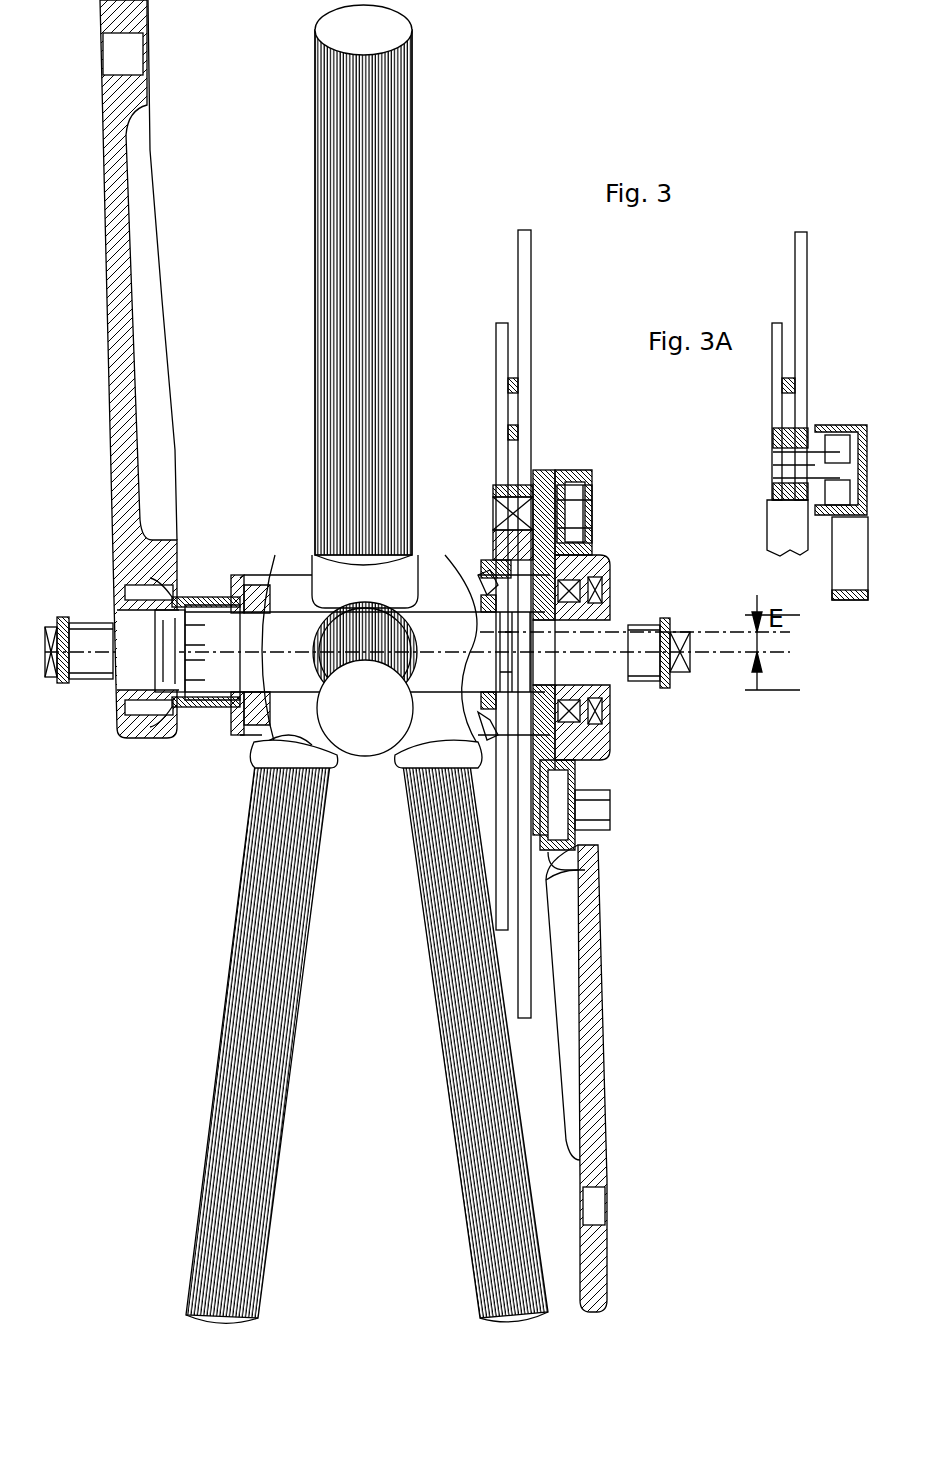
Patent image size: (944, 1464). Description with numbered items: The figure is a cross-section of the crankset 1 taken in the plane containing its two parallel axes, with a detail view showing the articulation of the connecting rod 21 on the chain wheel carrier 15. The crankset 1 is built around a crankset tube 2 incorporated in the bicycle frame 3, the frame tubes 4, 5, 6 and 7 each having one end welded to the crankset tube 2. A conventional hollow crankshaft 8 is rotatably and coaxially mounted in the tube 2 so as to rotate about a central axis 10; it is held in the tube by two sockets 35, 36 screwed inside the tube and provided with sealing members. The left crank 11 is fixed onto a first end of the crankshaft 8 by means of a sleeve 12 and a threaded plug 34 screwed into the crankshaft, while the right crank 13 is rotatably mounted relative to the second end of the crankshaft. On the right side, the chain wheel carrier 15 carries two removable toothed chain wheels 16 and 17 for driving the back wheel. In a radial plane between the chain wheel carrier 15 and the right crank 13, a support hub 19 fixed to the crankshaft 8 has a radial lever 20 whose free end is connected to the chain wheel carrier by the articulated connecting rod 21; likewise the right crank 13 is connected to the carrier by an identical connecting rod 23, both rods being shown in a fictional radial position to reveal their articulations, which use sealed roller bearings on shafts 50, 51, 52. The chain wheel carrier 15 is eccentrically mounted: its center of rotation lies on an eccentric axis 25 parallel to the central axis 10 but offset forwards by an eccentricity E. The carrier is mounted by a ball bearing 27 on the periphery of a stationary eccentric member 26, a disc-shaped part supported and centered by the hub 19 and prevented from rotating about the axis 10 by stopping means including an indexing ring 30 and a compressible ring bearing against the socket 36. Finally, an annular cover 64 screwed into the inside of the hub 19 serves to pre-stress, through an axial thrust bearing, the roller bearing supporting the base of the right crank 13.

In FIG. 3, the crankset 1 is at (155, 788).
In FIG. 3, the crankset tube 2 is at (290, 598).
In FIG. 3, the bicycle frame 3 is at (392, 285).
In FIG. 3, the tube 4 is at (330, 258).
In FIG. 3, the tube 5 is at (370, 745).
In FIG. 3, the tube 6 is at (240, 1062).
In FIG. 3, the tube 7 is at (455, 1062).
In FIG. 3, the hollow crankshaft 8 is at (488, 642).
In FIG. 3, the central axis 10 is at (788, 656).
In FIG. 3, the left crank 11 is at (125, 385).
In FIG. 3, the sleeve 12 is at (205, 600).
In FIG. 3, the right crank 13 is at (605, 1040).
In FIG. 3A, the chain wheel carrier 15 is at (780, 445).
In FIG. 3, the toothed chain wheel 16 is at (502, 346).
In FIG. 3, the toothed chain wheel 17 is at (526, 310).
In FIG. 3, the support hub 19 is at (607, 600).
In FIG. 3, the radial lever 20 is at (560, 548).
In FIG. 3, the connecting rod 21 is at (570, 468).
In FIG. 3A, the connecting rod 21 is at (852, 432).
In FIG. 3, the connecting rod 23 is at (585, 870).
In FIG. 3, the eccentric axis 25 is at (788, 634).
In FIG. 3, the eccentric member 26 is at (495, 522).
In FIG. 3, the ball bearing 27 is at (505, 500).
In FIG. 3, the indexing ring 30 is at (485, 568).
In FIG. 3, the threaded plug 34 is at (88, 690).
In FIG. 3, the socket 35 is at (236, 735).
In FIG. 3, the socket 36 is at (482, 582).
In FIG. 3, the shaft 50 is at (580, 514).
In FIG. 3A, the shaft 51 is at (790, 470).
In FIG. 3, the shaft 52 is at (612, 812).
In FIG. 3, the annular cover 64 is at (612, 712).